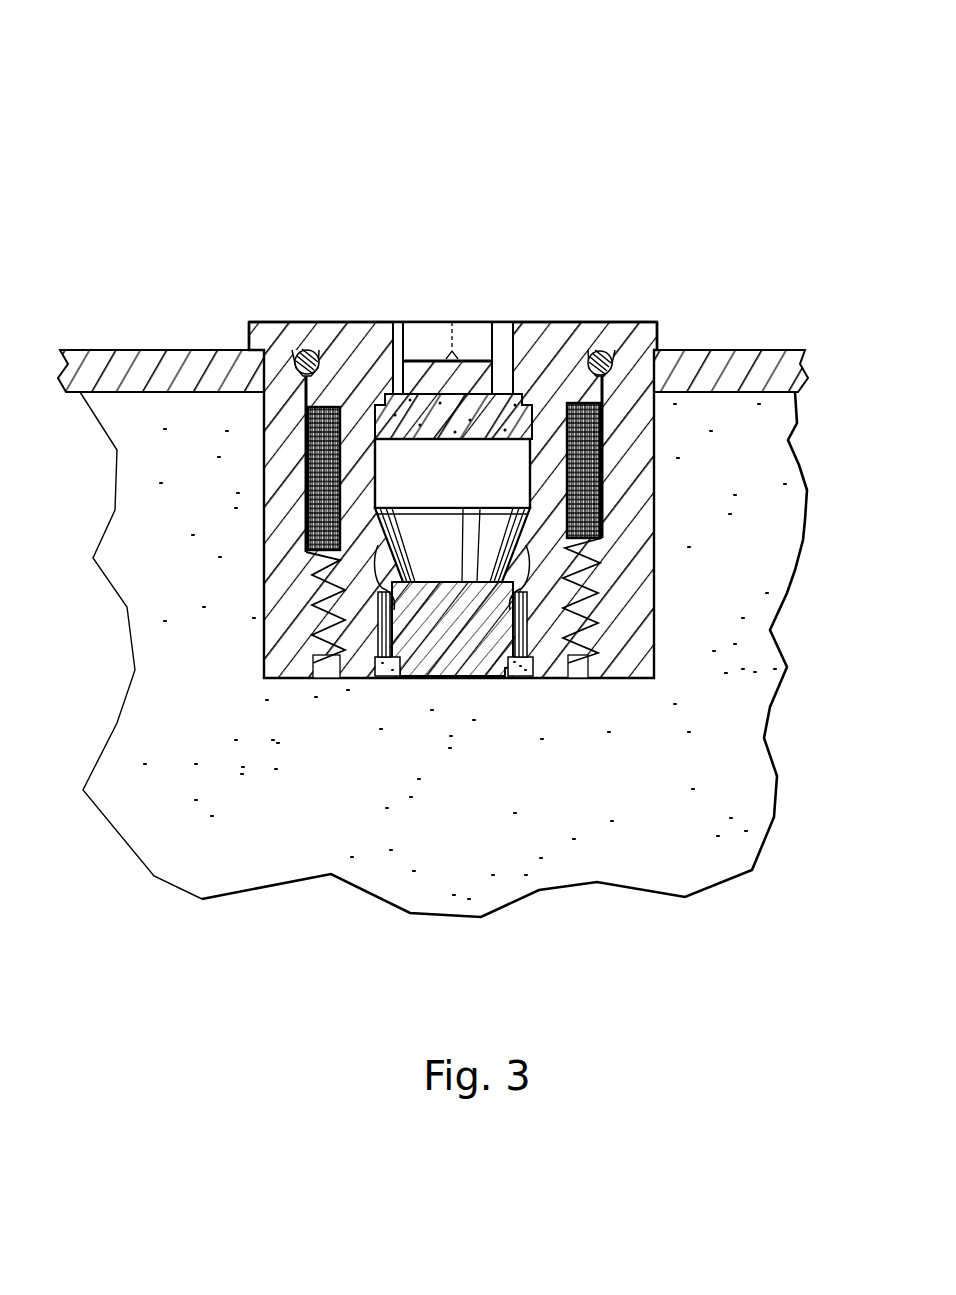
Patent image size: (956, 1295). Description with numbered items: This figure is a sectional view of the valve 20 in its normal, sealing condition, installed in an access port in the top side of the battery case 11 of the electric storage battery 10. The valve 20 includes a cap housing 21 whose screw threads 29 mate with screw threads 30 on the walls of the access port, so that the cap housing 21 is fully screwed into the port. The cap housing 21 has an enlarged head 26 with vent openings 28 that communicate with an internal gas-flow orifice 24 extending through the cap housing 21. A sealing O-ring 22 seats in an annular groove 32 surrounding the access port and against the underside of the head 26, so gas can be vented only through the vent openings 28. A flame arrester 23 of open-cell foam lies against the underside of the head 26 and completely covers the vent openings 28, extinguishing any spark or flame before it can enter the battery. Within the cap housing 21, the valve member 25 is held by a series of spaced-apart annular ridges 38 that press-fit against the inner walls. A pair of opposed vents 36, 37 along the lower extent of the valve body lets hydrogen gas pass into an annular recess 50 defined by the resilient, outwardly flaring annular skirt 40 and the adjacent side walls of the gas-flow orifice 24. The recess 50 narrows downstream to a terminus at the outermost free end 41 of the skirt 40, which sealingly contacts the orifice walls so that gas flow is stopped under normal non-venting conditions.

The electric storage battery 10 is at (125, 170).
The battery case 11 is at (93, 351).
The valve 20 is at (326, 300).
The cap housing 21 is at (297, 447).
The sealing O-ring 22 is at (308, 350).
The flame arrester 23 is at (528, 328).
The gas-flow orifice 24 is at (395, 672).
The valve member 25 is at (408, 702).
The enlarged head 26 is at (285, 328).
The vent openings 28 is at (507, 328).
The screw threads 29 is at (570, 597).
The screw threads 30 is at (583, 552).
The annular groove 32 is at (617, 343).
The vent 36 is at (569, 502).
The vent 37 is at (383, 660).
The annular ridges 38 is at (523, 645).
The annular skirt 40 is at (385, 575).
The free end 41 is at (377, 472).
The annular recess 50 is at (392, 590).